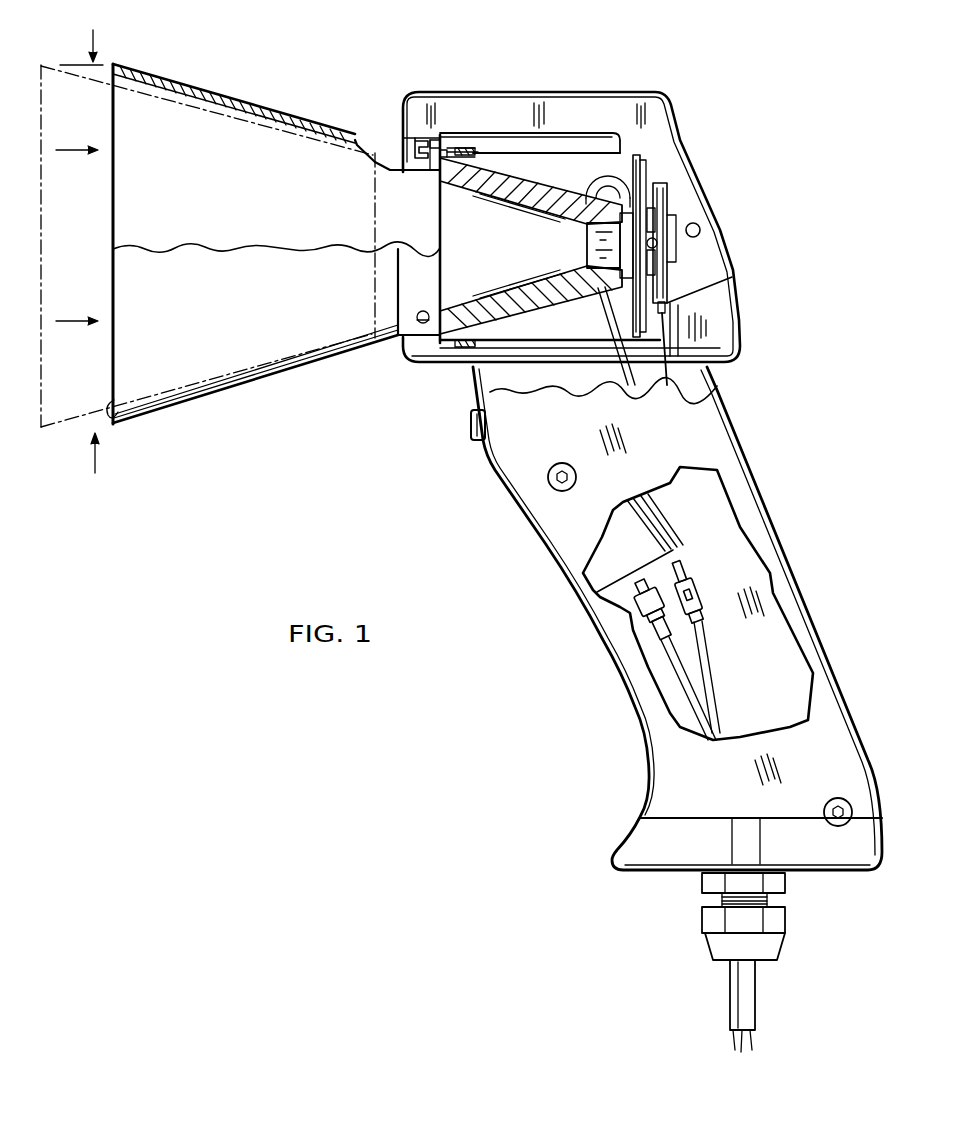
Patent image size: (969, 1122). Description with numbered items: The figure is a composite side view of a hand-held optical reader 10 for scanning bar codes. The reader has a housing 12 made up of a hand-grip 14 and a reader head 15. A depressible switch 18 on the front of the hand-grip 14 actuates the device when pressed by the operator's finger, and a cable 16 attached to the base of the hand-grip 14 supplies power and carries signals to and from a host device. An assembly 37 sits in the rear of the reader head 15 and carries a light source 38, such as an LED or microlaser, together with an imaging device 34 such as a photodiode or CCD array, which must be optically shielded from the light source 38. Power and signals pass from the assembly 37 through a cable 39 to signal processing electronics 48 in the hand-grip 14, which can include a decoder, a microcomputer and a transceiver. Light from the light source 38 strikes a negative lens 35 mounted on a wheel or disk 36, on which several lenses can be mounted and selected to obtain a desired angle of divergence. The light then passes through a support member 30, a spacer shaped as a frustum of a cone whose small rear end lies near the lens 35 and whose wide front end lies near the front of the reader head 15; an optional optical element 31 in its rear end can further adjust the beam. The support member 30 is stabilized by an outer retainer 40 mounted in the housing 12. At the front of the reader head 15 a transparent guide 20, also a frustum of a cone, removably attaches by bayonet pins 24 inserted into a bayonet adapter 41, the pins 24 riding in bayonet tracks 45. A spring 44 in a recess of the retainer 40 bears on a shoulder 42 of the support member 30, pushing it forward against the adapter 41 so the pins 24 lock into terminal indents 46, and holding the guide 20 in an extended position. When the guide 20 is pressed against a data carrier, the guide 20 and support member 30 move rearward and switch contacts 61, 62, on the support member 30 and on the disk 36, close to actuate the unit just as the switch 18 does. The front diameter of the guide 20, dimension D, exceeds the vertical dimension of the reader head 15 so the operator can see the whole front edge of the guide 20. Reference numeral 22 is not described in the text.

The hand-held optical reader 10 is at (696, 66).
The housing 12 is at (717, 385).
The hand-grip 14 is at (803, 590).
The reader head 15 is at (418, 92).
The cable 16 is at (742, 995).
The depressible switch 18 is at (474, 440).
The transparent spacing element or guide 20 is at (117, 408).
The cone wall 22 is at (177, 79).
The bayonet pins 24 is at (402, 343).
The support member 30 is at (553, 170).
The optical element 31 is at (585, 246).
The imaging device 34 is at (701, 230).
The negative lens 35 is at (672, 349).
The wheel or disk 36 is at (641, 168).
The assembly 37 is at (662, 221).
The light source 38 is at (658, 243).
The cable 39 is at (733, 361).
The outer retainer 40 is at (512, 145).
The bayonet adapter 41 is at (413, 152).
The shoulder 42 is at (460, 155).
The spring 44 is at (477, 155).
The bayonet tracks 45 is at (450, 153).
The terminal indents 46 is at (410, 139).
The signal processing electronics 48 is at (633, 540).
The switch contact 61 is at (632, 155).
The switch contact 62 is at (641, 203).